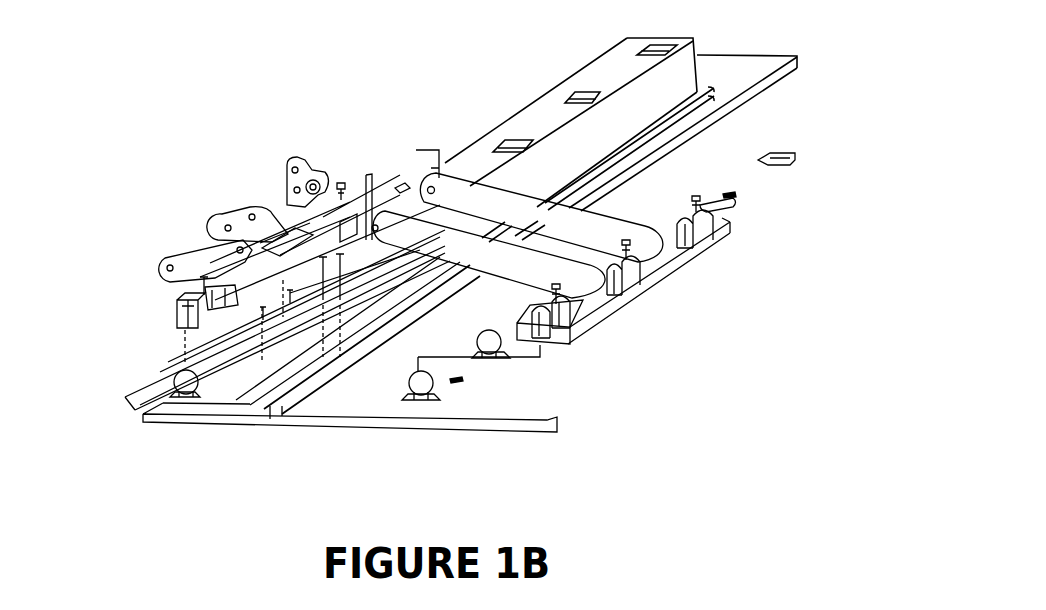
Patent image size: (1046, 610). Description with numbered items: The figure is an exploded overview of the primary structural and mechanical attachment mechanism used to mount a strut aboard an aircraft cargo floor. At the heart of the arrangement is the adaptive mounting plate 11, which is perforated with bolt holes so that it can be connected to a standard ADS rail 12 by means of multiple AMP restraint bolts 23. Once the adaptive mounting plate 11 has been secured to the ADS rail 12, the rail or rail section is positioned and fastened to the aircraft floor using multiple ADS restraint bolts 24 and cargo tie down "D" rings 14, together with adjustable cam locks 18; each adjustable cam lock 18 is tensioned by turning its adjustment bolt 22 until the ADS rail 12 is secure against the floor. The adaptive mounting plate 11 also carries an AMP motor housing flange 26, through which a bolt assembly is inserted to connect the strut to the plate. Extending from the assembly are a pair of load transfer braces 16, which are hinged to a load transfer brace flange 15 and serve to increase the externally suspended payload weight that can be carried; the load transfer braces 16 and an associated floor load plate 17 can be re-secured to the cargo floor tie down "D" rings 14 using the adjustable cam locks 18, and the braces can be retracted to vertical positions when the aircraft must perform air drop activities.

The adaptive mounting plate 11 is at (163, 272).
The ADS rail 12 is at (252, 300).
The cargo tie down "D" ring 14 is at (177, 375).
The load transfer brace flange 15 is at (303, 158).
The load transfer brace 16 is at (498, 265).
The floor load plate 17 is at (637, 290).
The adjustable cam lock 18 is at (706, 306).
The adjustment bolt 22 is at (698, 195).
The AMP restraint bolt 23 is at (298, 222).
The ADS restraint bolt 24 is at (378, 290).
The AMP motor housing flange 26 is at (183, 258).